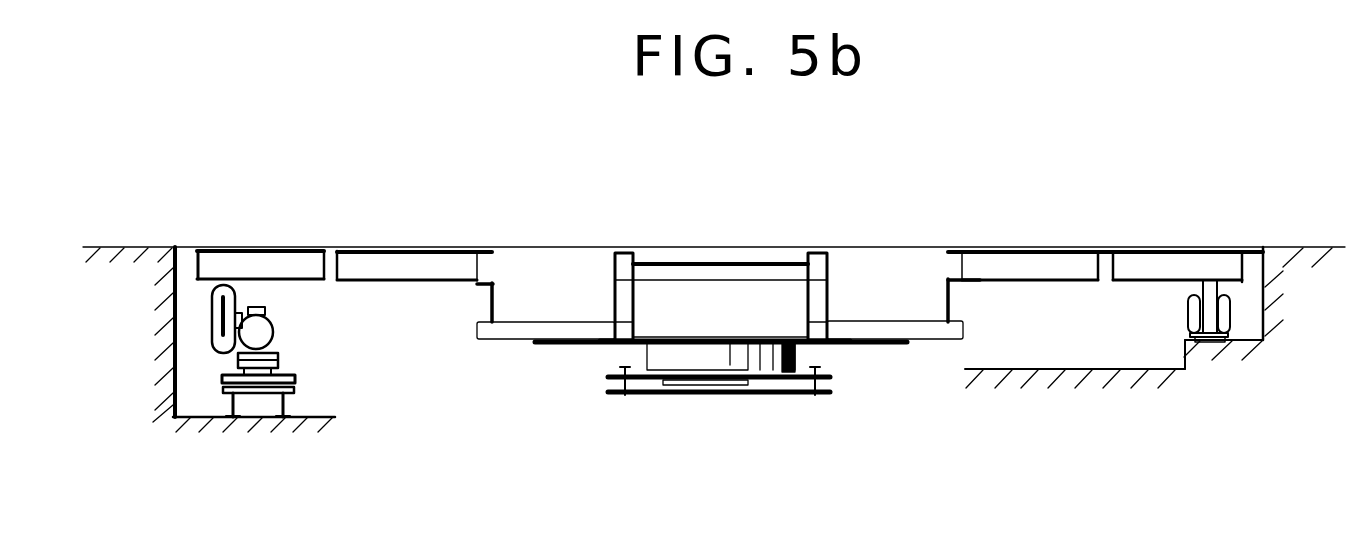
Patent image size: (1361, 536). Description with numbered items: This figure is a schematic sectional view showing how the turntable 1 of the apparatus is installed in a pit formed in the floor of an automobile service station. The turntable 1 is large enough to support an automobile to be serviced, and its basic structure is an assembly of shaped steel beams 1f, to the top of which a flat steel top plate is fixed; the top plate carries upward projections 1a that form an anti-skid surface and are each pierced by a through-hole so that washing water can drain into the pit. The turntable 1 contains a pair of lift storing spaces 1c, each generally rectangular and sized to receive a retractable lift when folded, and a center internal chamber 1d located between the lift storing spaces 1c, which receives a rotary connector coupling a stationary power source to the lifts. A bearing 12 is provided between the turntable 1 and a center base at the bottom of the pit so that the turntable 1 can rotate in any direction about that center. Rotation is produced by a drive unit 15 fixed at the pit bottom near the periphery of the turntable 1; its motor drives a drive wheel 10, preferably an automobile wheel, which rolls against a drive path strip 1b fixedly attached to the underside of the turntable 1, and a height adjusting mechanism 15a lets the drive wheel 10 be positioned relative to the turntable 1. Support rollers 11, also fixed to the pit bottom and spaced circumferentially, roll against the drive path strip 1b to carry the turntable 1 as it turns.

The turntable 1 is at (243, 247).
The upward projection 1a is at (408, 250).
The drive path strip 1b is at (237, 286).
The lift storing space 1c is at (553, 290).
The center internal chamber 1d is at (760, 312).
The steel beam 1f is at (332, 250).
The drive wheel 10 is at (212, 312).
The support roller 11 is at (1207, 317).
The bearing 12 is at (795, 352).
The drive unit 15 is at (269, 333).
The height adjusting mechanism 15a is at (296, 382).